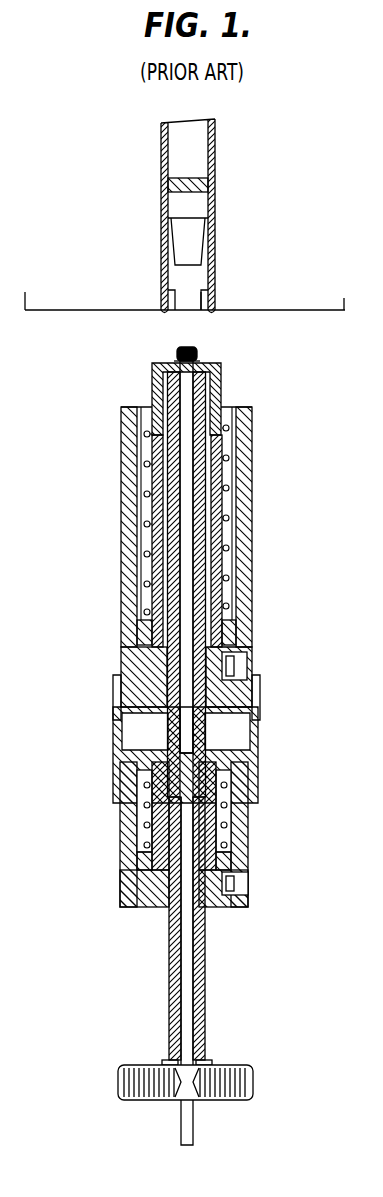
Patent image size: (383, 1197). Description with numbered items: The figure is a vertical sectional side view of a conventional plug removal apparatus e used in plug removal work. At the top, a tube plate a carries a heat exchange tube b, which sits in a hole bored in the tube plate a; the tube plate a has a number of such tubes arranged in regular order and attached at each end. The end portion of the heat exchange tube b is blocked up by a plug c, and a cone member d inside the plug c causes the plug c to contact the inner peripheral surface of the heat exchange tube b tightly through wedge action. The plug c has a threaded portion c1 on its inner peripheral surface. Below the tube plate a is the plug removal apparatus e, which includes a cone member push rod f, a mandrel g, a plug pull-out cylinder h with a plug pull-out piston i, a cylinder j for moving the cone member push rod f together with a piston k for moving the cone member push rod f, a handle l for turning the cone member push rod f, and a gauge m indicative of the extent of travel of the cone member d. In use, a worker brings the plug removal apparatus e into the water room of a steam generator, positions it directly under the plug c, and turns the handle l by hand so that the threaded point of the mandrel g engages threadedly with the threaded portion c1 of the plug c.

The tube plate a is at (63, 311).
The heat exchange tube b is at (201, 151).
The plug c is at (200, 189).
The threaded portion c1 is at (200, 309).
The cone member d is at (192, 243).
The plug removal apparatus e is at (278, 544).
The cone member push rod f is at (180, 348).
The mandrel g is at (205, 383).
The plug pull-out cylinder h is at (121, 568).
The plug pull-out piston i is at (237, 623).
The cylinder for moving the cone member push rod j is at (248, 840).
The piston for moving the cone member push rod k is at (230, 882).
The handle l is at (253, 1082).
The gauge m is at (181, 1133).